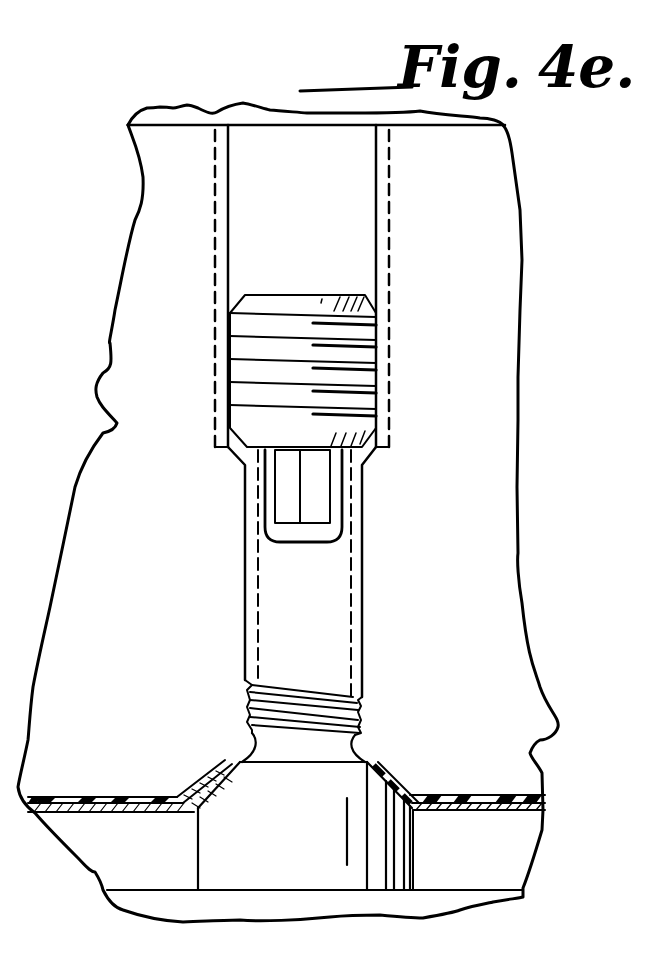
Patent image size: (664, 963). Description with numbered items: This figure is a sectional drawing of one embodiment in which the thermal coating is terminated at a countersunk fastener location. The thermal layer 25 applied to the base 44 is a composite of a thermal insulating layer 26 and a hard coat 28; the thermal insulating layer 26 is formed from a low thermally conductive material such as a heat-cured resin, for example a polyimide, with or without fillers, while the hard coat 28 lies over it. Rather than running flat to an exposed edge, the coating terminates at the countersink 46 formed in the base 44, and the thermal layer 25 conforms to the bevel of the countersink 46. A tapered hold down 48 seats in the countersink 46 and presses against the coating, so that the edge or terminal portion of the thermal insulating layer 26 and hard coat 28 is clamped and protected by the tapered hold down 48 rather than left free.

The base 44 is at (226, 760).
The countersink 46 is at (230, 783).
The thermal layer 25 is at (432, 795).
The thermal insulating layer 26 is at (507, 792).
The hard coat 28 is at (488, 813).
The tapered hold down 48 is at (277, 855).